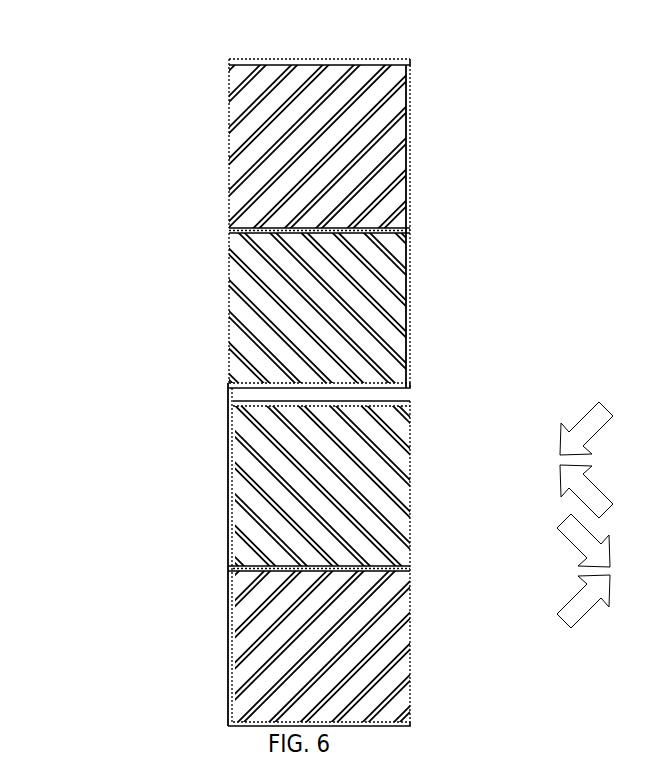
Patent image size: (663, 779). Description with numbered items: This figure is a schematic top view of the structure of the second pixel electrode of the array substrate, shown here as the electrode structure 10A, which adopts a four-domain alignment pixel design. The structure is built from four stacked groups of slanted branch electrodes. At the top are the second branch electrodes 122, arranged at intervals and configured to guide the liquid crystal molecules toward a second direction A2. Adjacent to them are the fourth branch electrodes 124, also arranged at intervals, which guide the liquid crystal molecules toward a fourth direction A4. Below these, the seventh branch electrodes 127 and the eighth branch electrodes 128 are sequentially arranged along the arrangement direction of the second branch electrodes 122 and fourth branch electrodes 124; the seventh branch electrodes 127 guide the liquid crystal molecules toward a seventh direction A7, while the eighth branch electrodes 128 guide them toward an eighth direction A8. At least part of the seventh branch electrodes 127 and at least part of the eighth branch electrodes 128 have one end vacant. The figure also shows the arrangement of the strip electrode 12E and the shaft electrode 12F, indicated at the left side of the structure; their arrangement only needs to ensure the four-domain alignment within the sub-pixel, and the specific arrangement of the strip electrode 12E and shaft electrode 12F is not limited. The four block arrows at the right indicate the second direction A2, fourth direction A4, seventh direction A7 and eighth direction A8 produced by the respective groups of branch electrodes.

The stacked assembly 10A is at (132, 51).
The second branch electrodes 122 is at (410, 120).
The fourth branch electrodes 124 is at (402, 318).
The seventh branch electrodes 127 is at (402, 463).
The eighth branch electrodes 128 is at (402, 647).
The strip electrode 12E is at (228, 566).
The shaft electrode 12F is at (229, 606).
The second direction A2 is at (563, 430).
The fourth direction A4 is at (563, 491).
The seventh direction A7 is at (561, 544).
The eighth direction A8 is at (561, 601).